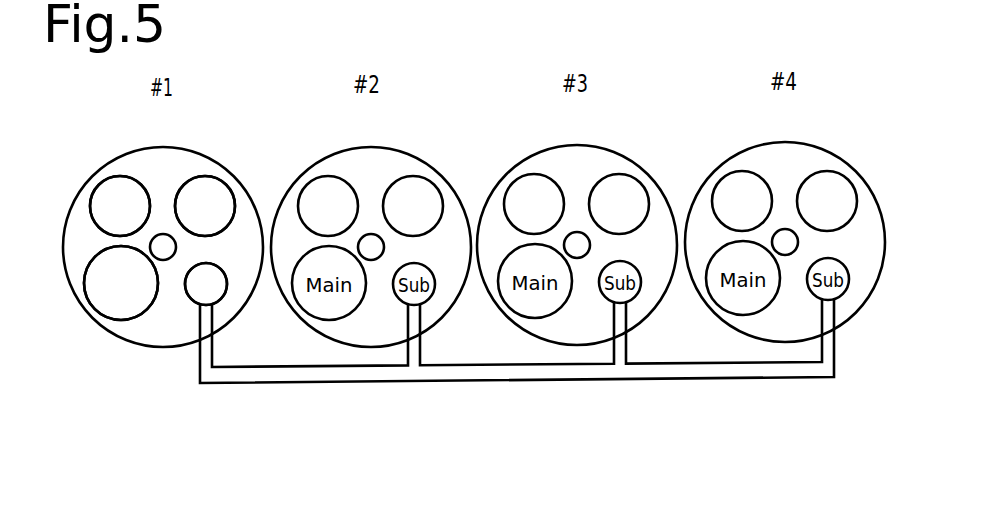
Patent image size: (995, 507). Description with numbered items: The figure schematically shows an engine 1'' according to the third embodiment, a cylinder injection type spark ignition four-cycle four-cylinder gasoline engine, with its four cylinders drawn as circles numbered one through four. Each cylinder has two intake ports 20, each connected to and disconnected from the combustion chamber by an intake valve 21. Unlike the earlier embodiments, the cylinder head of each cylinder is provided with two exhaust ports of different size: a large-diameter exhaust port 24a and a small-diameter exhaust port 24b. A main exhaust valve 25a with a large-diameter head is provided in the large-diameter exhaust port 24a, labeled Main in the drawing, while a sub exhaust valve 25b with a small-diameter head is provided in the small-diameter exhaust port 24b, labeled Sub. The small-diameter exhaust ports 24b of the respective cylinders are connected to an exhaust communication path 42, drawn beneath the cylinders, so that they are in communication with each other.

The engine 1'' is at (163, 318).
The intake port 20 is at (103, 183).
The intake valve 21 is at (133, 187).
The large-diameter exhaust port 24a is at (92, 308).
The small-diameter exhaust port 24b is at (219, 299).
The main exhaust valve 25a is at (125, 312).
The sub exhaust valve 25b is at (191, 301).
The exhaust communication path 42 is at (467, 372).